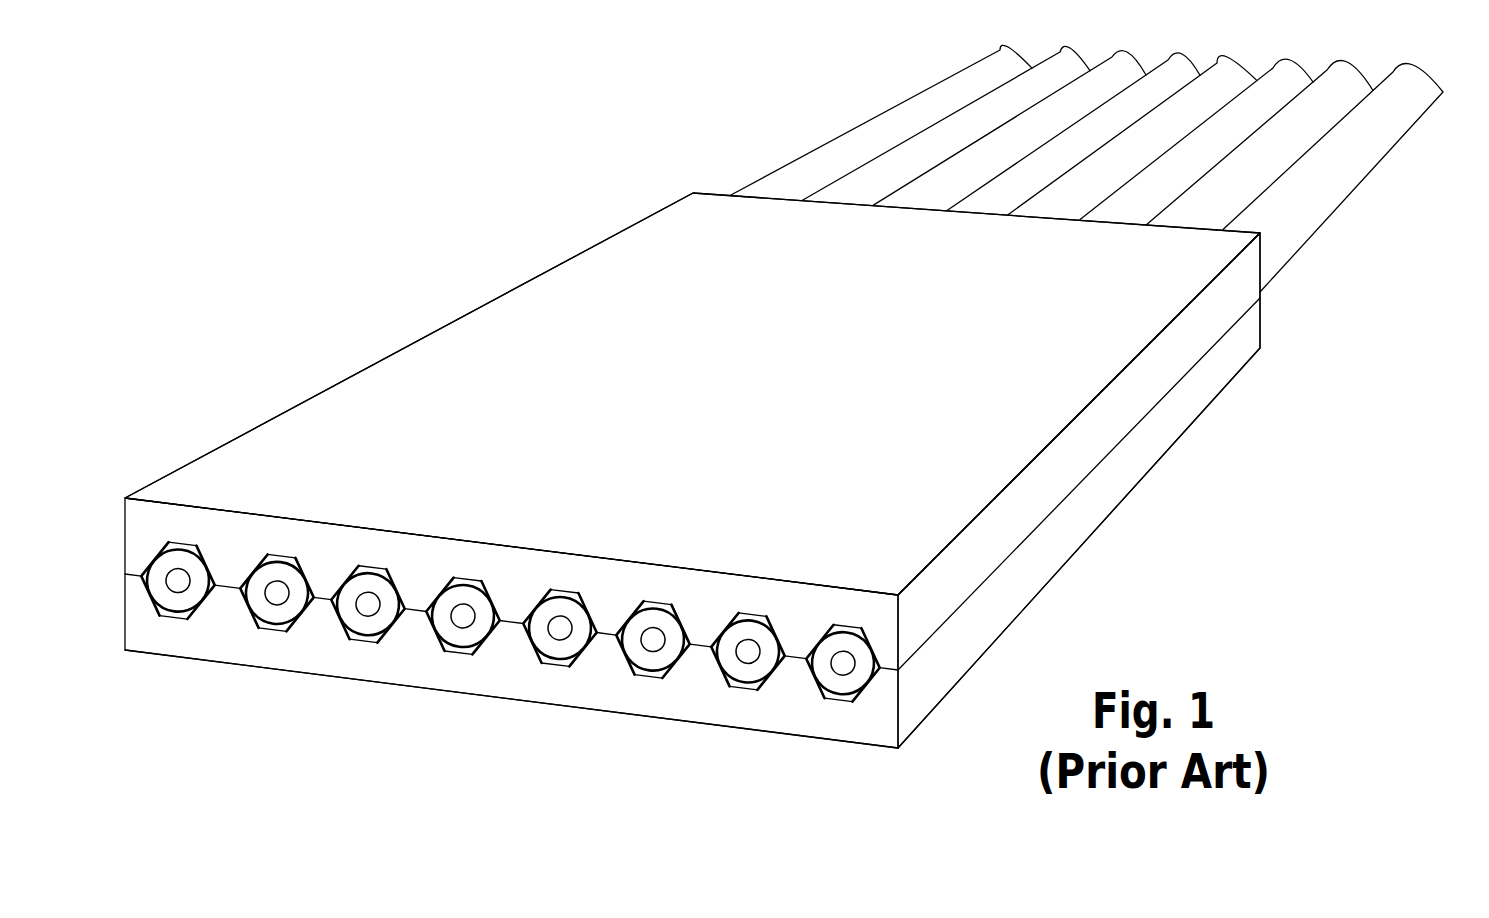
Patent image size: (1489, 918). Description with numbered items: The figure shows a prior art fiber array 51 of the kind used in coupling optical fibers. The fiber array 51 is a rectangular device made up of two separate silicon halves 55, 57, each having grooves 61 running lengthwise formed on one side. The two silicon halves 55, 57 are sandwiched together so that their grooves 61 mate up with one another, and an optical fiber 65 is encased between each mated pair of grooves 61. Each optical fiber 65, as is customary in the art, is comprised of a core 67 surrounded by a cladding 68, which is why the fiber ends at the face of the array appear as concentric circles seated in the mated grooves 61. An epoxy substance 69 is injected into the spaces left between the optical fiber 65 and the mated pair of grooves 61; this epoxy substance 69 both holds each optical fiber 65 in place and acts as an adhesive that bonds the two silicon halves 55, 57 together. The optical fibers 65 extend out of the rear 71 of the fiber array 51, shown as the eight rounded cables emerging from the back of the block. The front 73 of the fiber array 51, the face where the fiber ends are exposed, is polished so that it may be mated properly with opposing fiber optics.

The fiber array 51 is at (427, 195).
The silicon half 55 is at (1165, 425).
The silicon half 57 is at (440, 347).
The grooves 61 is at (277, 556).
The optical fiber 65 is at (748, 618).
The core 67 is at (840, 667).
The cladding 68 is at (840, 638).
The epoxy substance 69 is at (645, 603).
The rear 71 is at (1393, 227).
The front 73 is at (382, 743).